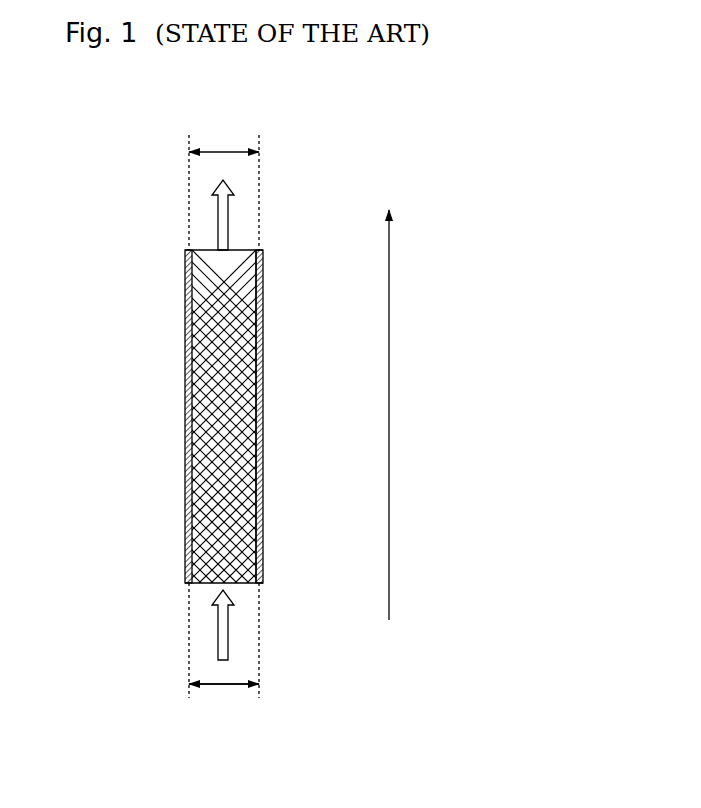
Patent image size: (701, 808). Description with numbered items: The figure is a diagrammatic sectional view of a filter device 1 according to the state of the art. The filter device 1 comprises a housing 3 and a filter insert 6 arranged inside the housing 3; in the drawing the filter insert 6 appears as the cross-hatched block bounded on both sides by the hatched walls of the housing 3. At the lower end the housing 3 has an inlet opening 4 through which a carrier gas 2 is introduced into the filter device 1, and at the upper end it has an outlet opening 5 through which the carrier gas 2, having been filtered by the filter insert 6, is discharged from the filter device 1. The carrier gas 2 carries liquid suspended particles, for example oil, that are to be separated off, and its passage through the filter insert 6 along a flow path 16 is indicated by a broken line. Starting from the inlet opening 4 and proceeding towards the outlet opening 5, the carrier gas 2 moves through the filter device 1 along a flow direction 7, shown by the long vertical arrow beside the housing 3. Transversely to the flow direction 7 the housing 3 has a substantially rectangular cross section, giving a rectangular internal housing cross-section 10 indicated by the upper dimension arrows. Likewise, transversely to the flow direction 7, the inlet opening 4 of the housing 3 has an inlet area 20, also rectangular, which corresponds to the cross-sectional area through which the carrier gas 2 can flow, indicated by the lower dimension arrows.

The filter device 1 is at (157, 268).
The carrier gas 2 is at (225, 632).
The housing 3 is at (186, 364).
The inlet opening 4 is at (202, 593).
The outlet opening 5 is at (205, 240).
The filter insert 6 is at (203, 451).
The flow direction 7 is at (403, 415).
The internal housing cross-section 10 is at (224, 184).
The flow path 16 is at (255, 478).
The inlet area 20 is at (226, 655).